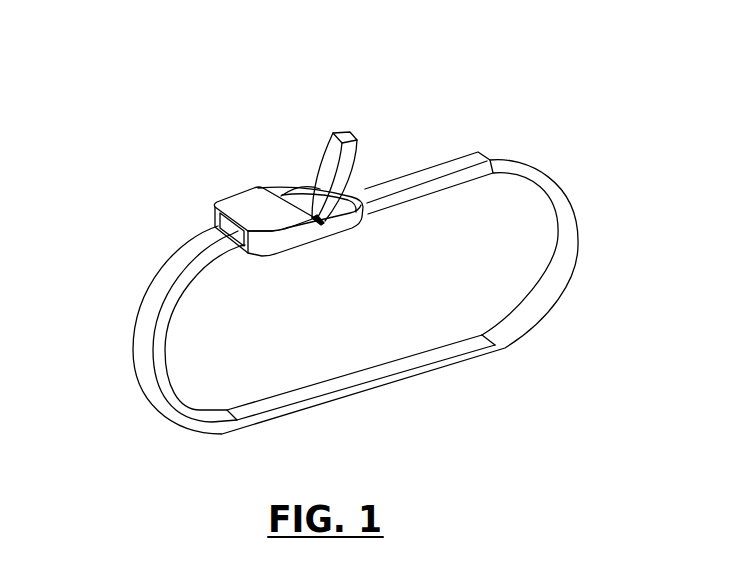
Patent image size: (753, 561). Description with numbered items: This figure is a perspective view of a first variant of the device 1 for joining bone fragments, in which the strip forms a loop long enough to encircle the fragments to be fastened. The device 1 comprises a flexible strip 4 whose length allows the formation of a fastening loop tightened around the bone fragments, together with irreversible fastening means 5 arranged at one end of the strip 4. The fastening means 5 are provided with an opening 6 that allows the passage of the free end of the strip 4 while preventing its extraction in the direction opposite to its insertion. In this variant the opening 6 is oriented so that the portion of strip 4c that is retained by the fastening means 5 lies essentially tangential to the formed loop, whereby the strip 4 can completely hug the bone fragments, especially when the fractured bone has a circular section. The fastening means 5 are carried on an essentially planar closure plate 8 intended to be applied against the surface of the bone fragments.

The device 1 is at (548, 98).
The flexible strip 4 is at (452, 369).
The portion of strip 4c is at (311, 215).
The fastening means 5 is at (235, 187).
The opening 6 is at (218, 227).
The closure plate 8 is at (248, 207).